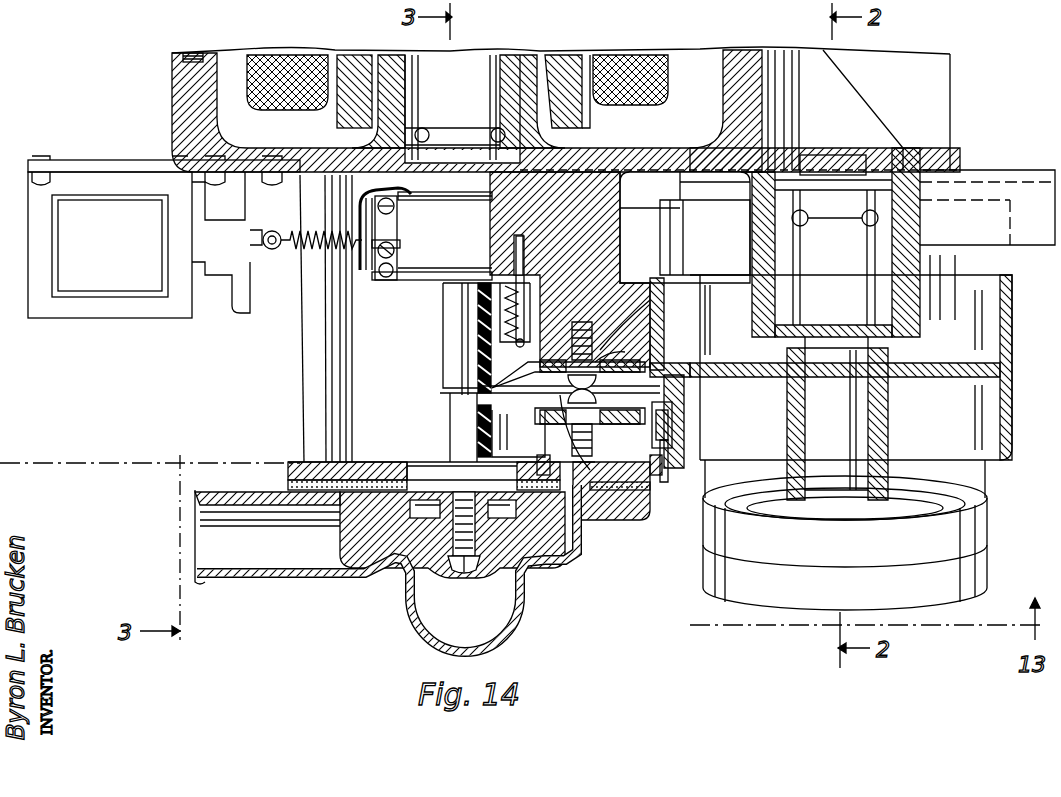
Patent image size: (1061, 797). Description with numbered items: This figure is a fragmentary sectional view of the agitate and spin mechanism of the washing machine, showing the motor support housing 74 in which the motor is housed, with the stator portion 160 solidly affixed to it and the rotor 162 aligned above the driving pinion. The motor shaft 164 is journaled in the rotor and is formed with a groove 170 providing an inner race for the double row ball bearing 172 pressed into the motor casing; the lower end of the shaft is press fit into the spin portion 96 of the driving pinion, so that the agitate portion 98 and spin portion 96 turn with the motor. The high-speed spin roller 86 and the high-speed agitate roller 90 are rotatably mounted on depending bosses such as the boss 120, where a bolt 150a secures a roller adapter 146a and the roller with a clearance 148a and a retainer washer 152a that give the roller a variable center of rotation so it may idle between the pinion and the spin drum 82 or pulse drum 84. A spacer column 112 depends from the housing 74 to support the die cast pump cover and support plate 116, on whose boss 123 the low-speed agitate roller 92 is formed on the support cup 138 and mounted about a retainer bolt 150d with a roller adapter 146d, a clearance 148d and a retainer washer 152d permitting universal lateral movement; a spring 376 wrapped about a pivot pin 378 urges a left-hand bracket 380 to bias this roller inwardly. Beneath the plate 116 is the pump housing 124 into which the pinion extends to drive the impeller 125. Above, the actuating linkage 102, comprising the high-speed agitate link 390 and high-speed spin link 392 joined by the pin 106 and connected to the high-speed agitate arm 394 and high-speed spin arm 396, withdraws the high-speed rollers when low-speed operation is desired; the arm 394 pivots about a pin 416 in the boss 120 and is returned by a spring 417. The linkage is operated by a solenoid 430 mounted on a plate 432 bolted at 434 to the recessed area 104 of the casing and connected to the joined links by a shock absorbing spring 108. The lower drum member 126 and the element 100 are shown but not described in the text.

The motor support housing 74 is at (172, 82).
The stator portion 160 is at (275, 65).
The rotor 162 is at (360, 65).
The motor shaft 164 is at (470, 84).
The groove 170 is at (445, 135).
The double row ball bearing 172 is at (507, 72).
The plate 432 is at (78, 160).
The solenoid 430 is at (110, 245).
The bolt 434 is at (272, 178).
The recessed area 104 is at (258, 165).
The spring 108 is at (360, 262).
The pin 106 is at (362, 268).
The spacer column 112 is at (302, 356).
The spin portion 96 is at (360, 190).
The high-speed spin link 392 is at (378, 216).
The high-speed agitate link 390 is at (394, 250).
The high-speed spin arm 396 is at (436, 202).
The high-speed agitate arm 394 is at (436, 276).
The actuating linkage 102 is at (426, 310).
The agitate portion 98 is at (462, 340).
The high-speed agitate roller 90 is at (462, 365).
The spring 417 is at (508, 318).
The pin 416 is at (524, 262).
The switch base 100 is at (448, 405).
The low-speed agitate roller 92 is at (470, 436).
The retainer washer 152d is at (530, 420).
The bolt 150a is at (578, 330).
The roller adapter 146a is at (630, 362).
The clearance 148a is at (640, 340).
The retainer washer 152a is at (670, 318).
The roller adapter 146d is at (640, 408).
The retainer bolt 150d is at (575, 456).
The clearance 148d is at (556, 480).
The left-hand bracket 380 is at (660, 420).
The spring 376 is at (668, 434).
The pivot pin 378 is at (650, 455).
The boss 123 is at (608, 476).
The pump cover and support plate 116 is at (288, 471).
The support cup 138 is at (502, 452).
The impeller 125 is at (382, 545).
The pump housing 124 is at (412, 598).
The boss 120 is at (580, 224).
The high-speed spin roller 86 is at (632, 214).
The spin drum 82 is at (985, 257).
The pulse drum 84 is at (1012, 445).
The drum 126 is at (1020, 560).